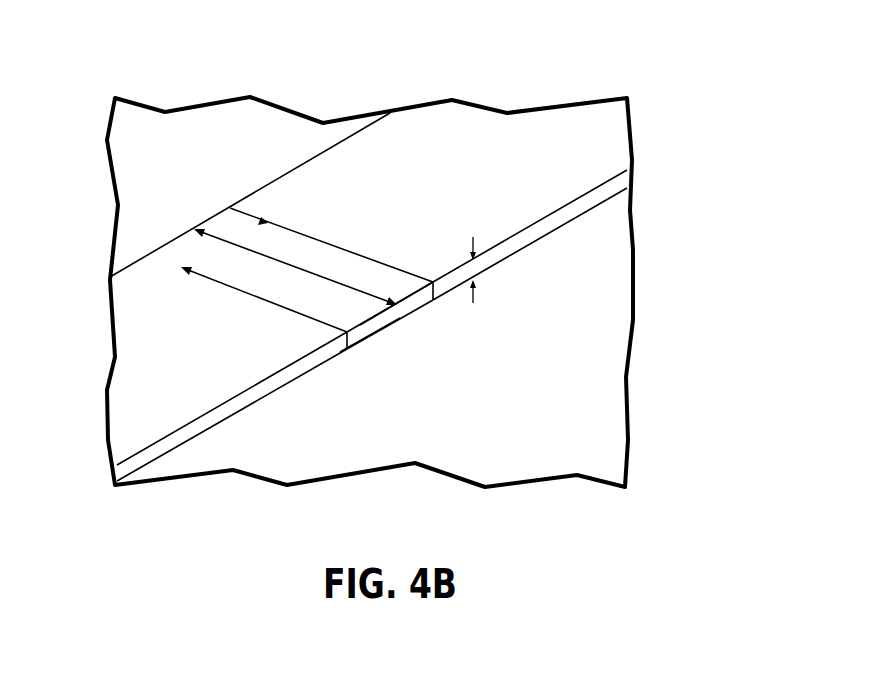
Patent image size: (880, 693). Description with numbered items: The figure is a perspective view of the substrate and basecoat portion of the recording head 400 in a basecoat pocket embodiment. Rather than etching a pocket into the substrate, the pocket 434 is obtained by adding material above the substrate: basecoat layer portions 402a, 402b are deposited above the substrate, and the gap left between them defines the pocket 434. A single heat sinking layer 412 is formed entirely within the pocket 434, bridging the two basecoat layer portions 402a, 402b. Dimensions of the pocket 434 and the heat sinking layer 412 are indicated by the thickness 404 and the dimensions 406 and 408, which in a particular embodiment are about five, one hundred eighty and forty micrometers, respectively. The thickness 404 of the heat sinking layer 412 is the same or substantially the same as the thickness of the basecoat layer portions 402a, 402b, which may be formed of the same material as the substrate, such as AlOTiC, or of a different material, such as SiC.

The recording head 400 is at (679, 117).
The basecoat layer portion 402a is at (203, 425).
The basecoat layer portion 402b is at (567, 213).
The thickness 404 is at (483, 293).
The dimension of pocket and heat sinking layer 406 is at (210, 237).
The dimension of pocket and heat sinking layer 408 is at (195, 262).
The heat sinking layer 412 is at (393, 320).
The pocket 434 is at (379, 372).